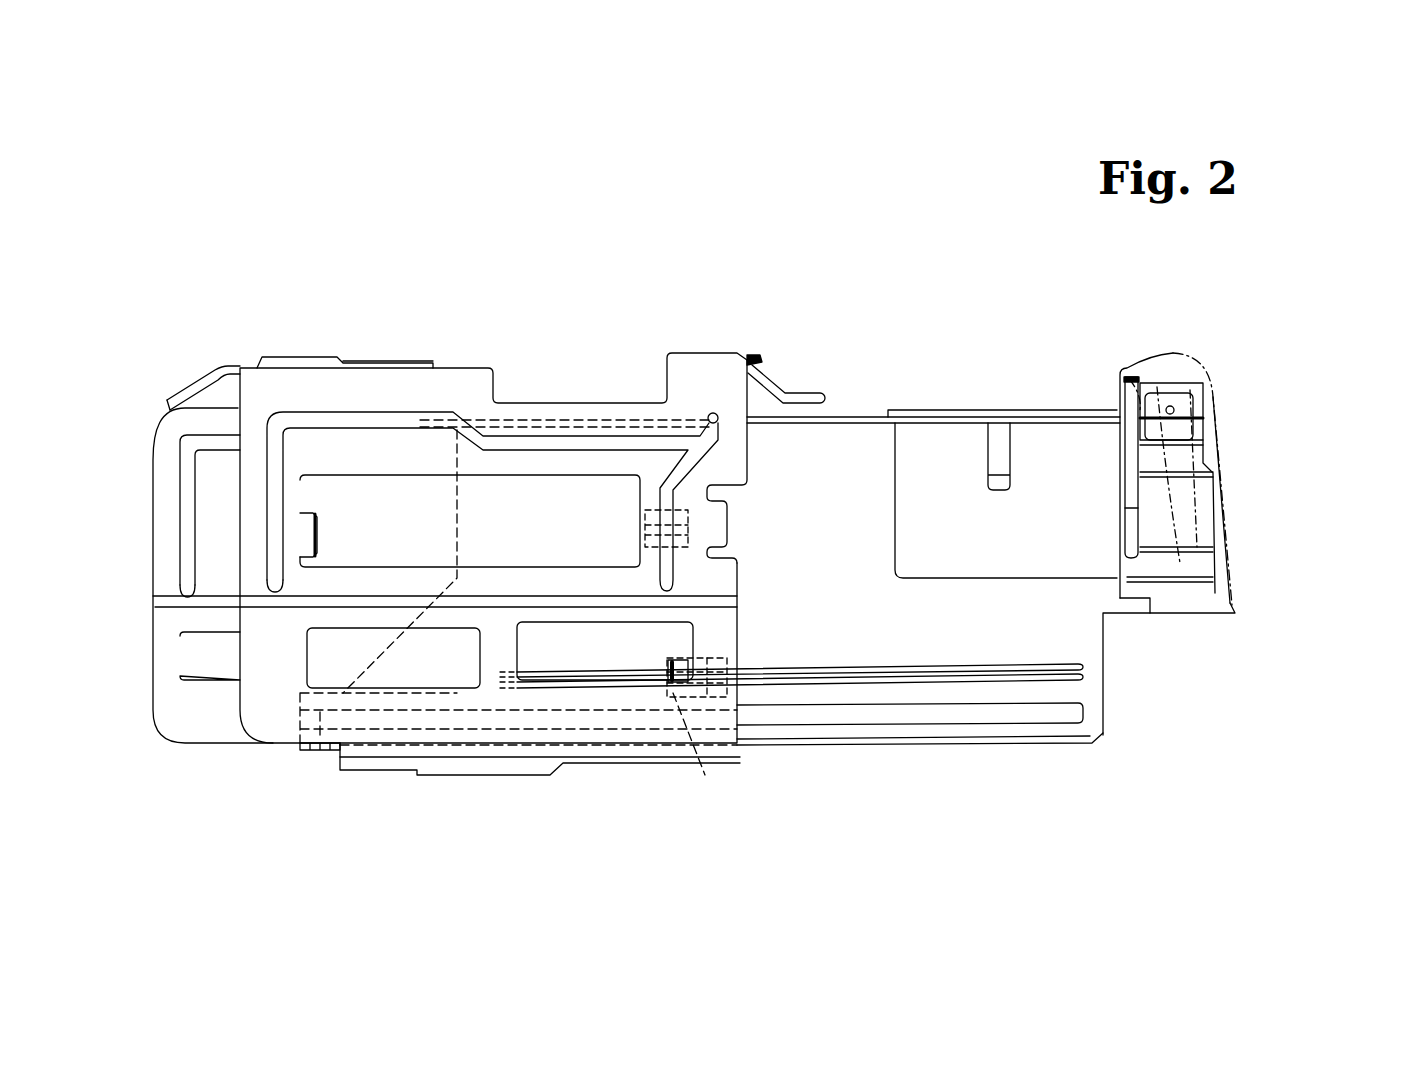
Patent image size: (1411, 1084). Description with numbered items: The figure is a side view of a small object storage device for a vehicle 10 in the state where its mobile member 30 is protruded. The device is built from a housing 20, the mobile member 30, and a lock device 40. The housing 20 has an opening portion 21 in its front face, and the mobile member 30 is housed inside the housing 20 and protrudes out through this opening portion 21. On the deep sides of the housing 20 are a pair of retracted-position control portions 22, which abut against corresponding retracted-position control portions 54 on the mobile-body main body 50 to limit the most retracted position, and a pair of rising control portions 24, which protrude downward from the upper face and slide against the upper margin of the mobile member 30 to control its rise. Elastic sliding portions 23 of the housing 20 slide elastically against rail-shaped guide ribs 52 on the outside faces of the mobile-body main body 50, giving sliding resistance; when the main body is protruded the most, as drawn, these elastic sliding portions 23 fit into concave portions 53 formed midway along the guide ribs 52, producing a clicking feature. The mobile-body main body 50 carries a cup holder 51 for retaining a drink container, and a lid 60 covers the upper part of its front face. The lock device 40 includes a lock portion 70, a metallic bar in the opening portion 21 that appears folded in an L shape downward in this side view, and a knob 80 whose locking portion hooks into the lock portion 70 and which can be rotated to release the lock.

The small object storage device for a vehicle 10 is at (271, 183).
The housing 20 is at (457, 358).
The opening portion 21 is at (737, 518).
The retracted-position control portions 22 is at (317, 526).
The elastic sliding portions 23 is at (692, 766).
The rising control portions 24 is at (203, 380).
The mobile member 30 is at (1022, 793).
The lock device 40 is at (1272, 488).
The mobile-body main body 50 is at (1100, 733).
The cup holder 51 is at (1062, 432).
The guide ribs 52 is at (1090, 670).
The concave portions 53 is at (590, 765).
The retracted-position control portions 54 is at (745, 695).
The lid 60 is at (1173, 357).
The lock portion 70 is at (806, 393).
The knob 80 is at (1203, 522).